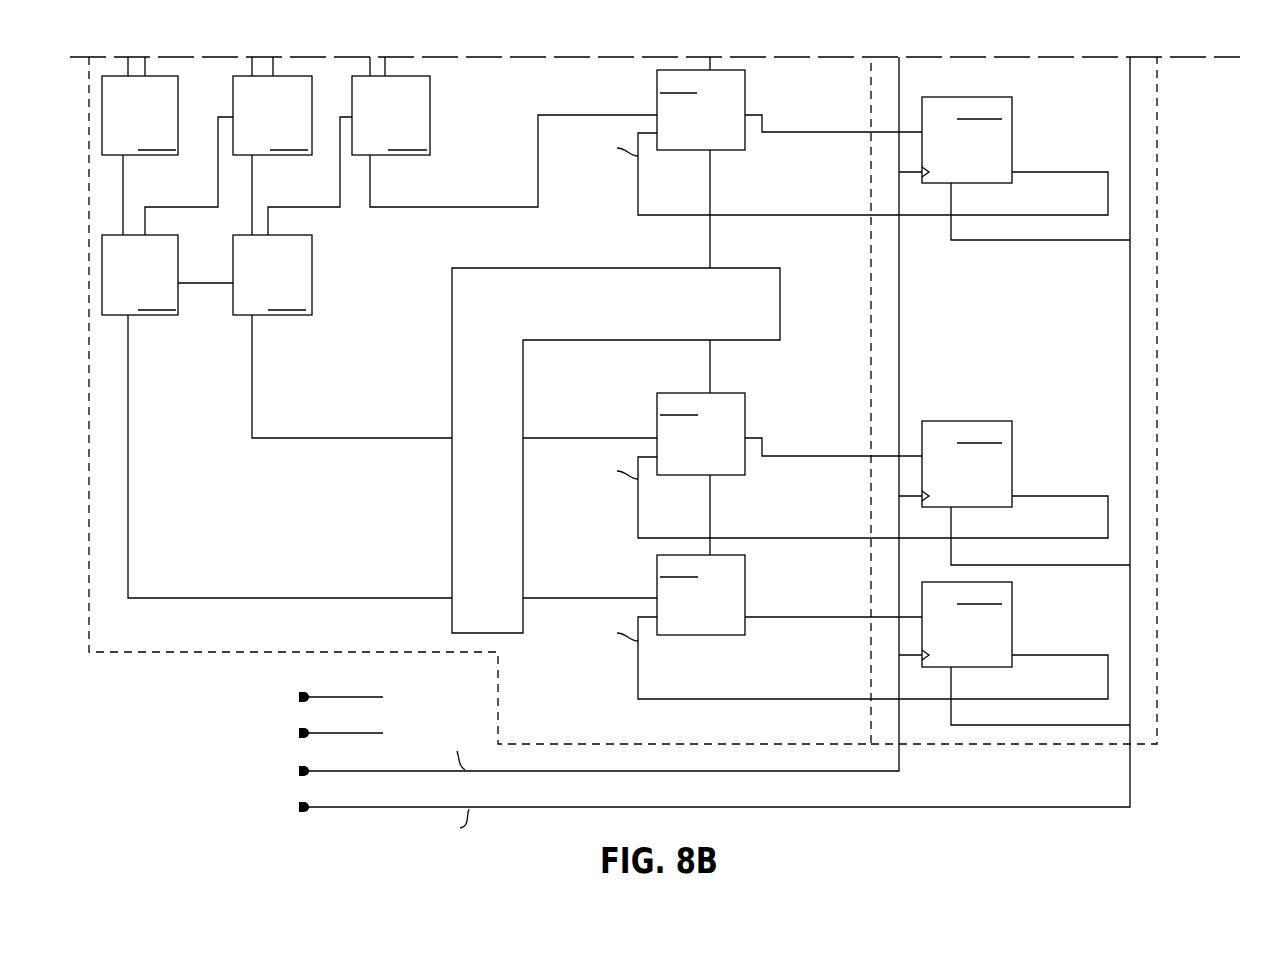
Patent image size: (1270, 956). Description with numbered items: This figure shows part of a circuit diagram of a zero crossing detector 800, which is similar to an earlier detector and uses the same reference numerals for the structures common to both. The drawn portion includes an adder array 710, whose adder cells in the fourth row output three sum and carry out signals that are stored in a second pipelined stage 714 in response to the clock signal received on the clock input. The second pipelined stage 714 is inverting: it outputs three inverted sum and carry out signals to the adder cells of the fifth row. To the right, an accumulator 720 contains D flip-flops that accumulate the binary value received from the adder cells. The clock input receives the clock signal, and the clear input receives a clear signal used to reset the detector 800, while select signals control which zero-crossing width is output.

The adder array 710 is at (163, 656).
The second pipelined stage 714 is at (506, 324).
The accumulator 720 is at (1157, 369).
The zero crossing detector 800 is at (176, 769).